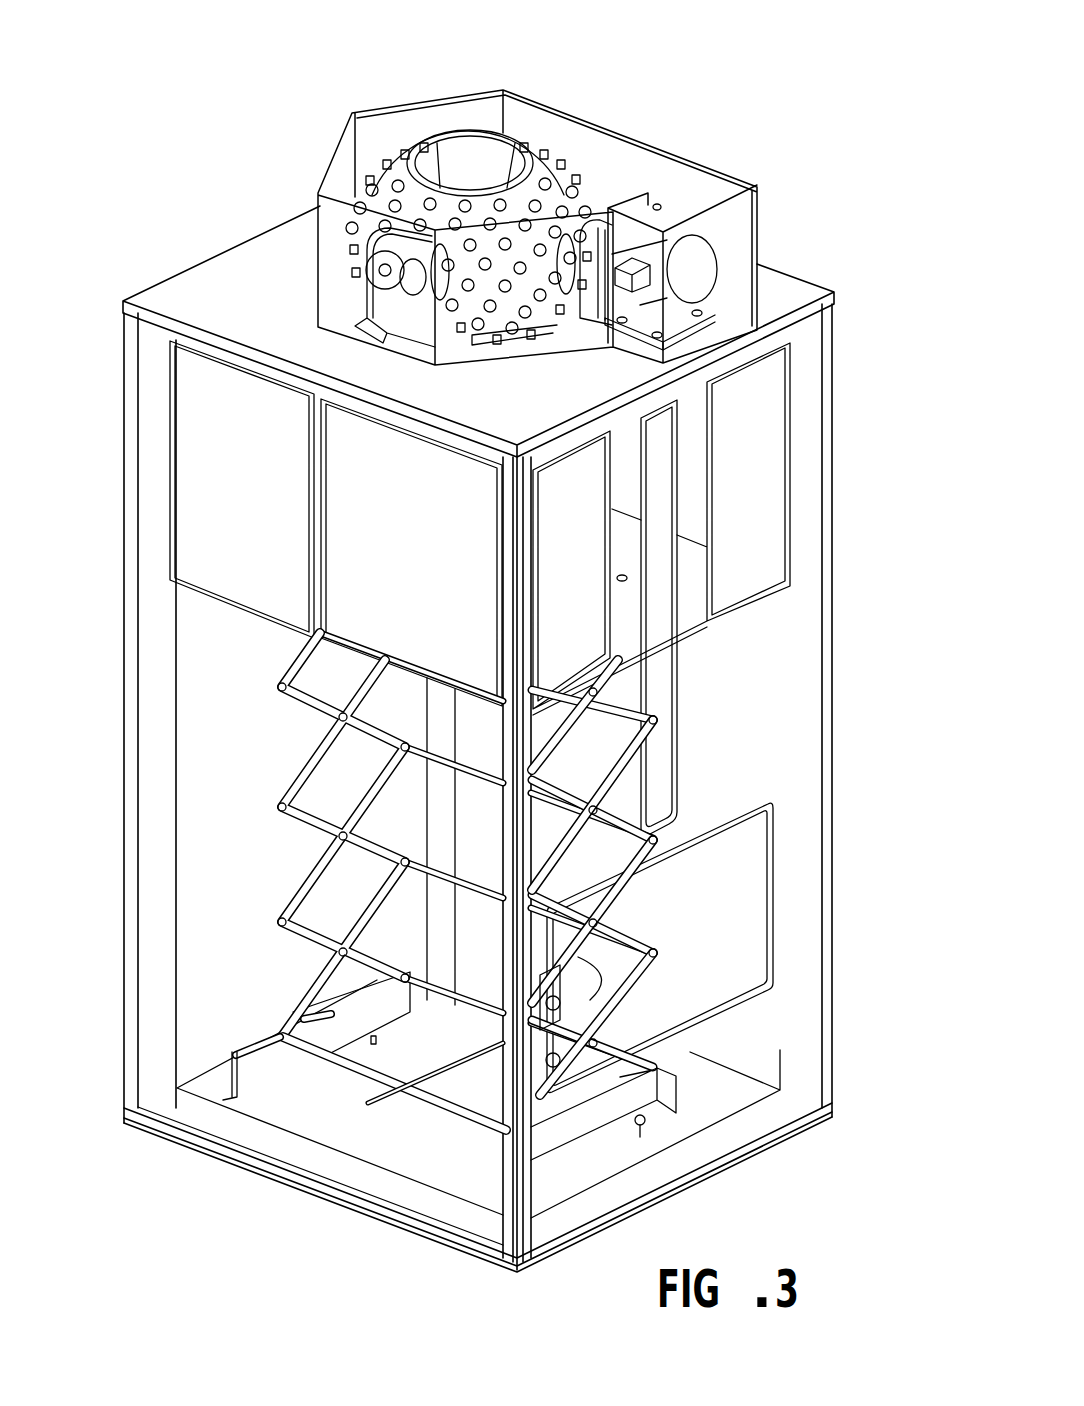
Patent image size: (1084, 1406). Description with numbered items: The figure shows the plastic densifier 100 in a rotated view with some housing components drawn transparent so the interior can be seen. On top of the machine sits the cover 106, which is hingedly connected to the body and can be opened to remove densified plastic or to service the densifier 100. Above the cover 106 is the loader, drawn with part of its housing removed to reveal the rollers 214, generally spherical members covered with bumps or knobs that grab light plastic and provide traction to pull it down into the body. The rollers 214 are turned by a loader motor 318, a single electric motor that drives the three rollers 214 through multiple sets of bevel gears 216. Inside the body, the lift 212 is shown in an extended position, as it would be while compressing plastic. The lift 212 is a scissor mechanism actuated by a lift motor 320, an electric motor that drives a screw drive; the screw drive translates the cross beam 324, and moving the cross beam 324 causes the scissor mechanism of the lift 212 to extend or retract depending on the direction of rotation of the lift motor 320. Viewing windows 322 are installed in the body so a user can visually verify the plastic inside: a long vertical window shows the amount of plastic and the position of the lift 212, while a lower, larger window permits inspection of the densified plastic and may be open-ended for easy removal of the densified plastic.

The plastic densifier 100 is at (131, 76).
The cover 106 is at (170, 303).
The lift 212 is at (555, 742).
The rollers 214 is at (557, 166).
The bevel gears 216 is at (318, 208).
The loader motor 318 is at (703, 248).
The lift motor 320 is at (585, 997).
The viewing windows 322 is at (674, 502).
The cross beam 324 is at (300, 1053).